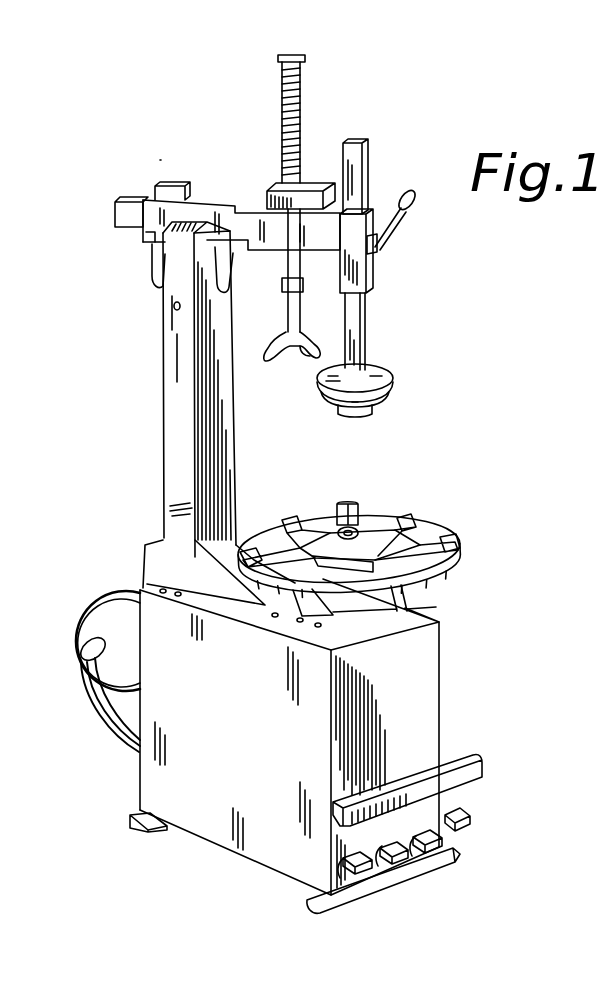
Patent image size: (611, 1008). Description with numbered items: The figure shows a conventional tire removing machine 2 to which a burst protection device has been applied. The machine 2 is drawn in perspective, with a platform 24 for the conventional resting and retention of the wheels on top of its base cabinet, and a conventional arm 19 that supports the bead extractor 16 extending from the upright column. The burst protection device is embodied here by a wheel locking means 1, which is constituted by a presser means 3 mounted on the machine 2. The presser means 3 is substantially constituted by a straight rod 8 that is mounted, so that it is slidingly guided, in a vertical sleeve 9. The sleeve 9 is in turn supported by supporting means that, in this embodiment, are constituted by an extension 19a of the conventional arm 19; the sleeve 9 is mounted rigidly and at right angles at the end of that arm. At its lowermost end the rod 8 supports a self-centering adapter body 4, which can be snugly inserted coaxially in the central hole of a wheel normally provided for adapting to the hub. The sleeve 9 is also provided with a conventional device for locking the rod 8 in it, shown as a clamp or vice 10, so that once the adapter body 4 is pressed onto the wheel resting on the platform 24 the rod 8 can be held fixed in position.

The wheel locking means 1 is at (420, 318).
The tire removing machine 2 is at (424, 706).
The presser means 3 is at (401, 379).
The self-centering adapter body 4 is at (422, 408).
The straight rod 8 is at (357, 182).
The vertical sleeve 9 is at (373, 276).
The clamp 10 is at (386, 240).
The bead extractor 16 is at (267, 364).
The arm 19 is at (137, 207).
The extension 19a is at (313, 237).
The platform 24 is at (459, 549).